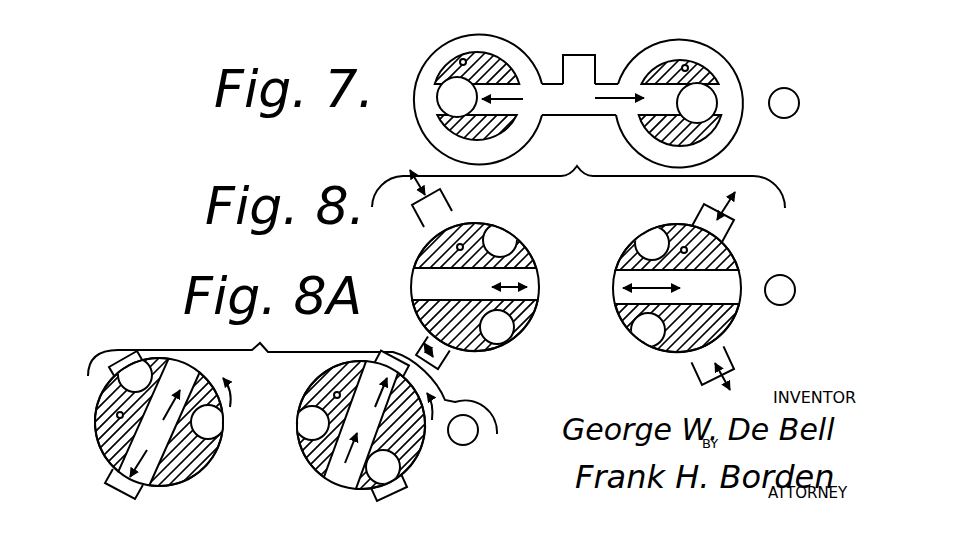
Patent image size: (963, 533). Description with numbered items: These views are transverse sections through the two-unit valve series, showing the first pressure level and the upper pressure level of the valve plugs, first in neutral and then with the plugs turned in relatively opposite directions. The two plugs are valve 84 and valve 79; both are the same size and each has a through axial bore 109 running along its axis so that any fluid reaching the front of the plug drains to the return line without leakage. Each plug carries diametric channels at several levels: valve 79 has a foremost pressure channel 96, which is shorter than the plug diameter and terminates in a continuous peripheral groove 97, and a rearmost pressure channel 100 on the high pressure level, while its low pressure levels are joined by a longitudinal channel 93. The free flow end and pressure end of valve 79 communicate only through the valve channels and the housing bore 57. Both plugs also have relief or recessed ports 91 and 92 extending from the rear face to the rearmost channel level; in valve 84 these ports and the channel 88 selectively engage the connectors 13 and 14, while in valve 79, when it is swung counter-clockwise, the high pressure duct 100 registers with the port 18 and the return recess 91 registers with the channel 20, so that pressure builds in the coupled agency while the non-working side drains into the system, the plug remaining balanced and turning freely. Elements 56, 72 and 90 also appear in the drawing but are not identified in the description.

In FIG. 8, the connector 13 is at (437, 210).
In FIG. 8A, the connector 13 is at (121, 382).
In FIG. 8, the connector 14 is at (449, 357).
In FIG. 8A, the connector 14 is at (116, 489).
In FIG. 8, the port 18 is at (735, 230).
In FIG. 8, the channel 20 is at (721, 353).
In FIG. 8A, the channel 20 is at (404, 489).
In FIG. 7, the stop lug 56 is at (580, 13).
In FIG. 7, the bore 57 is at (605, 111).
In FIG. 7, the pin 72 is at (786, 103).
In FIG. 8, the pin 72 is at (781, 290).
In FIG. 8A, the pin 72 is at (466, 434).
In FIG. 7, the valve 79 is at (697, 132).
In FIG. 8, the valve 79 is at (714, 320).
In FIG. 8A, the valve 79 is at (320, 455).
In FIG. 8, the valve 84 is at (449, 251).
In FIG. 7, the channel 88 is at (492, 92).
In FIG. 8, the channel 88 is at (474, 287).
In FIG. 8A, the channel 88 is at (213, 343).
In FIG. 7, the opening 90 is at (455, 96).
In FIG. 8, the relief or recessed port 91 is at (503, 238).
In FIG. 8A, the relief or recessed port 91 is at (408, 471).
In FIG. 8, the relief or recessed port 92 is at (504, 334).
In FIG. 8A, the relief or recessed port 92 is at (214, 428).
In FIG. 7, the longitudinal channel 93 is at (708, 103).
In FIG. 7, the foremost pressure channel 96 is at (665, 97).
In FIG. 7, the continuous peripheral groove 97 is at (695, 46).
In FIG. 8, the rearmost pressure channel 100 is at (712, 287).
In FIG. 8A, the rearmost pressure channel 100 is at (350, 402).
In FIG. 8, the through axial bore 109 is at (684, 246).